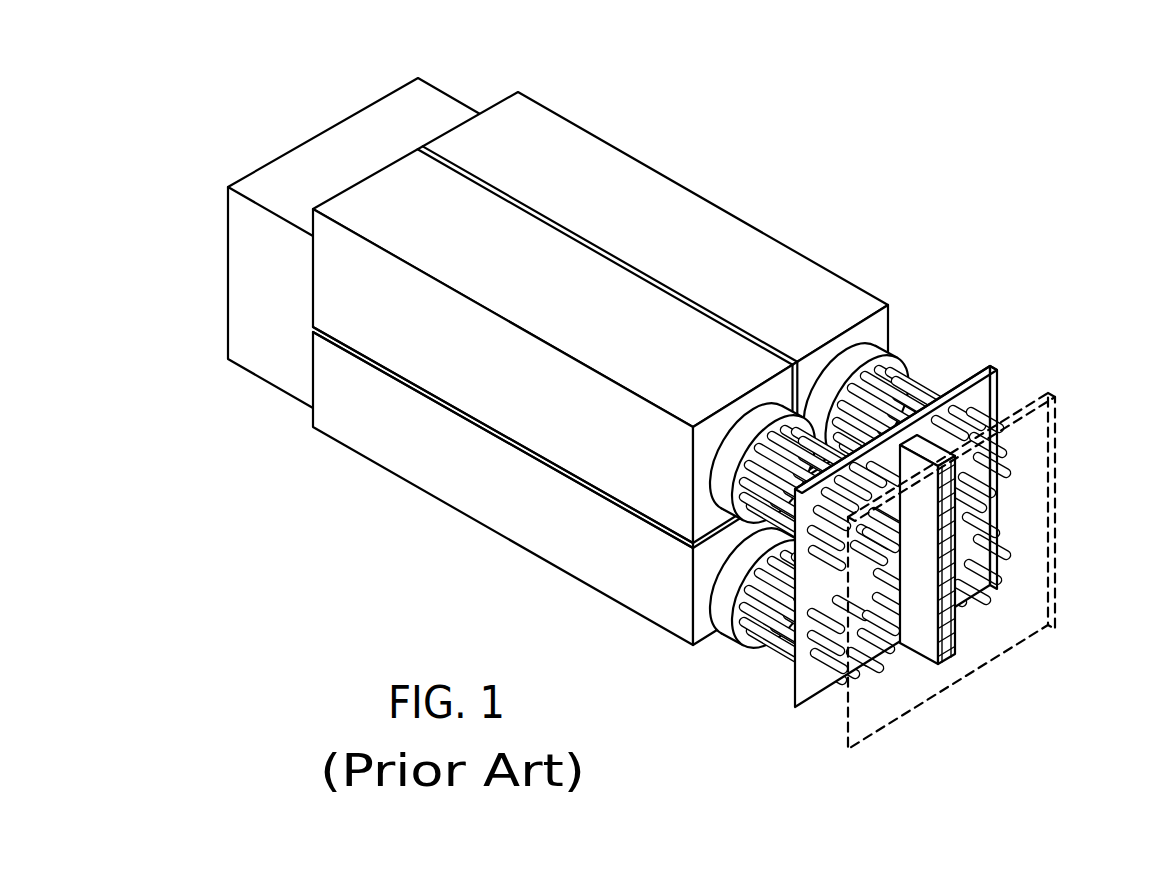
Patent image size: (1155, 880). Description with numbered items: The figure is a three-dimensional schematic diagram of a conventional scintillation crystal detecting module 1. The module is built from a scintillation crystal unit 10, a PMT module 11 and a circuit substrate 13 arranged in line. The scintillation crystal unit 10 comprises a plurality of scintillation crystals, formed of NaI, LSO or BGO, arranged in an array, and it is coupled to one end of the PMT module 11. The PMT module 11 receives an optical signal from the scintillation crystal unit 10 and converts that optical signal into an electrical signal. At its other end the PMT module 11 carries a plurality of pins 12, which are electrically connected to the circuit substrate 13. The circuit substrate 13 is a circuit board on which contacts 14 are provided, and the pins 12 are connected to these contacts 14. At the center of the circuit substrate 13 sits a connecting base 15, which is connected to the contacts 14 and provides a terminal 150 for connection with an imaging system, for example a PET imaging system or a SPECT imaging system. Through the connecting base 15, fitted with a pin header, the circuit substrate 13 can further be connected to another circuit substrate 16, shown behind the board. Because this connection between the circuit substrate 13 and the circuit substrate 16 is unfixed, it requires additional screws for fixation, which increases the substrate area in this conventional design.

The scintillation crystal detecting module 1 is at (558, 325).
The scintillation crystal unit 10 is at (311, 127).
The PMT module 11 is at (743, 225).
The pins 12 is at (925, 380).
The circuit substrate 13 is at (988, 363).
The contacts 14 is at (978, 412).
The connecting base 15 is at (915, 640).
The terminal 150 is at (958, 518).
The circuit substrate 16 is at (1005, 620).